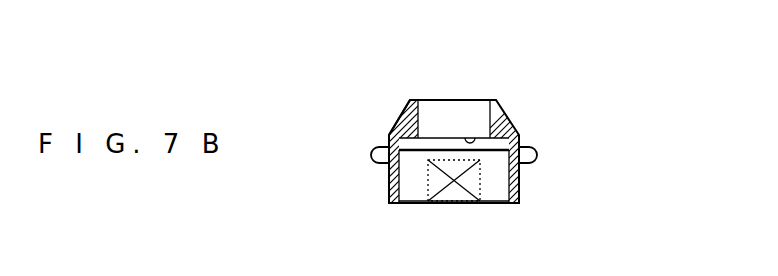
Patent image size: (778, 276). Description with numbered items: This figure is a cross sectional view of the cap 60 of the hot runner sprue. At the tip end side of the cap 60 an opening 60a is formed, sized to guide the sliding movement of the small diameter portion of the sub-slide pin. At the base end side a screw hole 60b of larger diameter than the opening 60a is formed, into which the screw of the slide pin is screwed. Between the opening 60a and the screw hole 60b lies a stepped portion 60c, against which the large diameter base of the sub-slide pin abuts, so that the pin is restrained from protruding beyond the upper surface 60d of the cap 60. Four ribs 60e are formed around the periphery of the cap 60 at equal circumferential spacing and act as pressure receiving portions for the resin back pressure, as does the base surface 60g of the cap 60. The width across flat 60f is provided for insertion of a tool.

The cap 60 is at (540, 96).
The opening 60a is at (425, 115).
The screw hole 60b is at (407, 178).
The stepped portion 60c is at (474, 138).
The upper surface 60d is at (410, 97).
The ribs 60e is at (378, 147).
The width across flat 60f is at (480, 182).
The base surface 60g is at (519, 203).